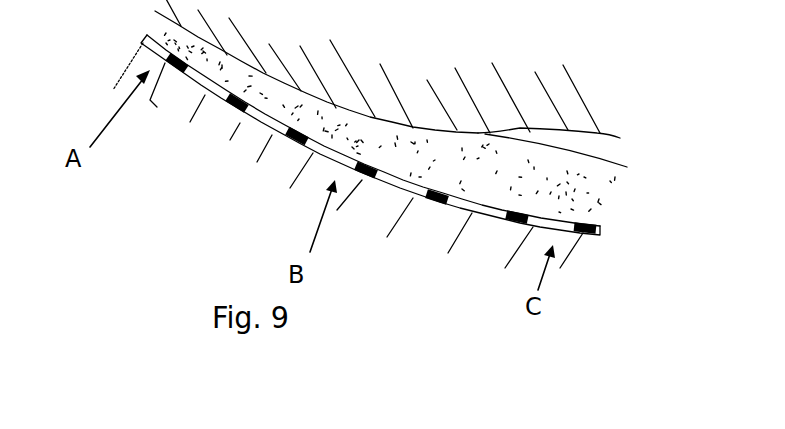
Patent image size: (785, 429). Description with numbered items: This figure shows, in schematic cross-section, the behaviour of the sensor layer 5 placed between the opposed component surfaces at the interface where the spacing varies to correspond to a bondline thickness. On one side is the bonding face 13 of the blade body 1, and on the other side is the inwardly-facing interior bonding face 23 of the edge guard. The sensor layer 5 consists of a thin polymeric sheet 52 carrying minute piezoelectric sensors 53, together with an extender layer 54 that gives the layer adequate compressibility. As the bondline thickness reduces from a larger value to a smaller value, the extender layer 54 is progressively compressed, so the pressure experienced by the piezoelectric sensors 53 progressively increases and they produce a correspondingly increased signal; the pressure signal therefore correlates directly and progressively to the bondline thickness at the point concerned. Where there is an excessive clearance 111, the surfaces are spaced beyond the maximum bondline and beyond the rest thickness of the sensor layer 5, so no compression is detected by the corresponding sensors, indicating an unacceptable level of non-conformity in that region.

The blade body 1 is at (382, 88).
The bonding face 13 is at (478, 133).
The excessive clearance 111 is at (585, 148).
The sensor layer 5 is at (653, 185).
The extender layer 54 is at (577, 192).
The polymeric sheet 52 is at (593, 233).
The piezoelectric sensors 53 is at (362, 175).
The interior bonding face 23 is at (258, 128).